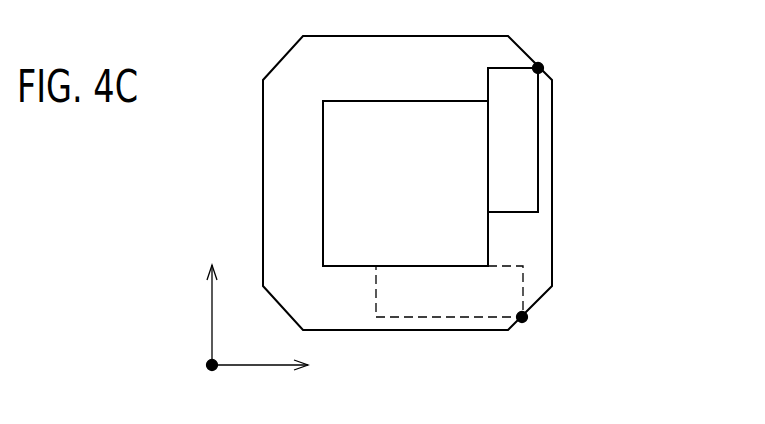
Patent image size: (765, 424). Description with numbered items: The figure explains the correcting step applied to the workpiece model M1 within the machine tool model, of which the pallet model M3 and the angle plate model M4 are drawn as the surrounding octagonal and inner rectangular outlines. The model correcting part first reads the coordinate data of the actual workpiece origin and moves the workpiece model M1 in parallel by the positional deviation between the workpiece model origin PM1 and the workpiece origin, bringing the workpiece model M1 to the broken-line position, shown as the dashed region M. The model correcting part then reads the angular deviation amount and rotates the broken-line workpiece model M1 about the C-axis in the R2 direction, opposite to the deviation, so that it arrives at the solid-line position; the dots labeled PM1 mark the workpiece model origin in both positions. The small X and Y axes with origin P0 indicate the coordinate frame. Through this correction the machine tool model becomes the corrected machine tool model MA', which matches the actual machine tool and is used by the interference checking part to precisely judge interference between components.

The corrected machine tool model MA' is at (495, 183).
The pallet model M3 is at (263, 120).
The angle plate model M4 is at (323, 163).
The workpiece model M1 is at (523, 127).
The workpiece model origin PM1 is at (543, 67).
The R2 direction R2 is at (423, 242).
The mask region M is at (450, 316).
The origin point P0 is at (263, 320).